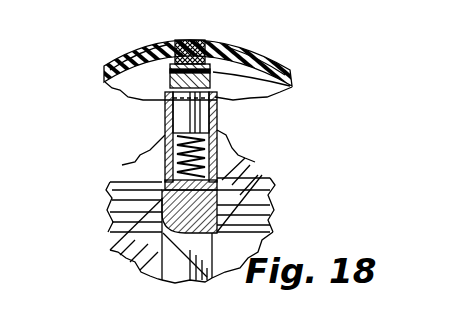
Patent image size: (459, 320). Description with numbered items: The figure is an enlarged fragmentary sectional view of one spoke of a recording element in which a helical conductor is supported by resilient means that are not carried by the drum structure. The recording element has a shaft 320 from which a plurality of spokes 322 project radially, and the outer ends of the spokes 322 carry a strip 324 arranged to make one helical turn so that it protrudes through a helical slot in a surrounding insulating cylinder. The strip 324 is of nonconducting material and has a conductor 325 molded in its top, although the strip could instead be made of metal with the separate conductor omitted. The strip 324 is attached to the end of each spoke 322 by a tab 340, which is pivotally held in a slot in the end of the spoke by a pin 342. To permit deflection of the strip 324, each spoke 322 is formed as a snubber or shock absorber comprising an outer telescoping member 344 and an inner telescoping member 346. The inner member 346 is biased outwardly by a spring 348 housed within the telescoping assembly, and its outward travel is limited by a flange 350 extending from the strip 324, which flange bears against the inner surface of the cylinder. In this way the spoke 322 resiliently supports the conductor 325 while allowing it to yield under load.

The shaft 320 is at (110, 183).
The spokes 322 is at (158, 122).
The strip 324 is at (230, 24).
The conductor 325 is at (196, 43).
The tabs 340 is at (272, 66).
The pin 342 is at (238, 50).
The outer telescoping member 344 is at (216, 108).
The inner telescoping member 346 is at (164, 104).
The spring 348 is at (163, 158).
The flange 350 is at (123, 50).